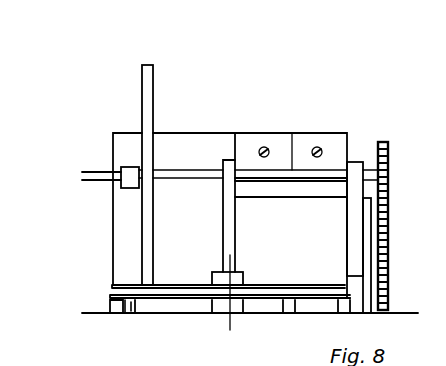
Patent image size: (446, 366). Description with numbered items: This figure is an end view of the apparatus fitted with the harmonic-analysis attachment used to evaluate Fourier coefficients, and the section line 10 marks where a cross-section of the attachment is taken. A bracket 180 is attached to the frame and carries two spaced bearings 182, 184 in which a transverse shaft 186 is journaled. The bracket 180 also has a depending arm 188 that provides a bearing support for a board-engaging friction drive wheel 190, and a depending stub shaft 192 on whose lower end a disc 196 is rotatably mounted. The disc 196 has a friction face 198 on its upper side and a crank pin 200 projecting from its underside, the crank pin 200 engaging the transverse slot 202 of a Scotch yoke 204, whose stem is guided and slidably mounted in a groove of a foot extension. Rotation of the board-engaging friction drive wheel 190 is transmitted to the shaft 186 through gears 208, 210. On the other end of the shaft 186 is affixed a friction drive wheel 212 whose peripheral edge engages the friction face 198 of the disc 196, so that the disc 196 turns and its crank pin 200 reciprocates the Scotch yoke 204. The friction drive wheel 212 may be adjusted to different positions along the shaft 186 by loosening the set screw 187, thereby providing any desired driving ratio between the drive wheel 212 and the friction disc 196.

The section line 10 is at (230, 255).
The bracket 180 is at (287, 192).
The bearing 182 is at (222, 160).
The bearing 184 is at (341, 170).
The transverse shaft 186 is at (291, 170).
The set screw 187 is at (138, 165).
The depending arm 188 is at (353, 228).
The friction drive wheel 190 is at (367, 306).
The stub shaft 192 is at (223, 233).
The disc 196 is at (272, 291).
The friction face 198 is at (120, 289).
The crank pin 200 is at (290, 300).
The transverse slot 202 is at (131, 312).
The Scotch yoke 204 is at (110, 300).
The gear 208 is at (389, 172).
The gear 210 is at (389, 259).
The friction drive wheel 212 is at (154, 63).